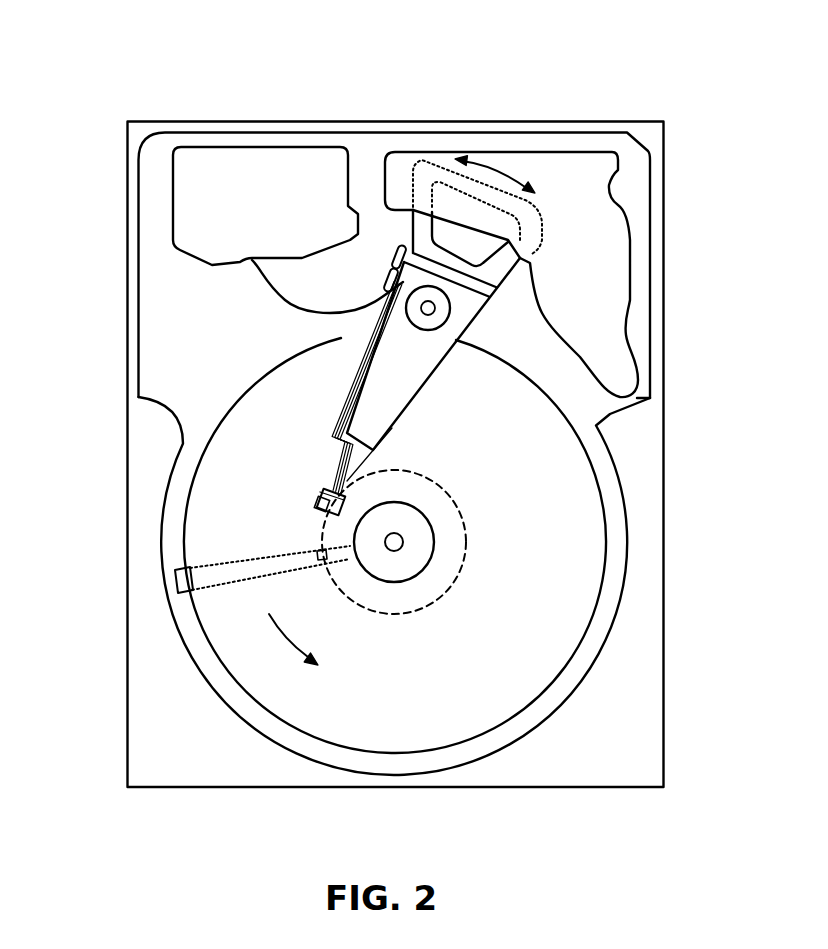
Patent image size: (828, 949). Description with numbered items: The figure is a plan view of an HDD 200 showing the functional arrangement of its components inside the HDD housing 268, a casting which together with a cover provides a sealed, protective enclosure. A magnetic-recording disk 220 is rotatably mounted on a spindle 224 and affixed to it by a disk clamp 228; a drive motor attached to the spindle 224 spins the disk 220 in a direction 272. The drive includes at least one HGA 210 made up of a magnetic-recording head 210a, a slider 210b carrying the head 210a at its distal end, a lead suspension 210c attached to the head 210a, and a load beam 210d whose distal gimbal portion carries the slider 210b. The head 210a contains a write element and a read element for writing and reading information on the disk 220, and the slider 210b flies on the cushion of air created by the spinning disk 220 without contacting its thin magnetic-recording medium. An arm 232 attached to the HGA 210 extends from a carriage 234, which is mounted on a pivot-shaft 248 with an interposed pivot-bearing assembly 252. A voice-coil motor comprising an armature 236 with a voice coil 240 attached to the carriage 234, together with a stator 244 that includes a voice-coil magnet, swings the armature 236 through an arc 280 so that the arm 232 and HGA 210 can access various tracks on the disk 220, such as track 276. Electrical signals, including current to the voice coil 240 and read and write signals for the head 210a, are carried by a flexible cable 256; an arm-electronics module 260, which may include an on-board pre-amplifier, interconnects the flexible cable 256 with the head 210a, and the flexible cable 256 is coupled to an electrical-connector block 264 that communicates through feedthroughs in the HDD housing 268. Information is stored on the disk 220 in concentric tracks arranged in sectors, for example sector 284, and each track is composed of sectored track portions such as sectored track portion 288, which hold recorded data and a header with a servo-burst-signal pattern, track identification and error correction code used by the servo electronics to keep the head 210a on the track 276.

The HDD 200 is at (97, 57).
The HGA 210 is at (202, 446).
The magnetic-recording head 210a is at (322, 497).
The slider 210b is at (332, 478).
The lead suspension 210c is at (340, 458).
The load beam 210d is at (348, 438).
The magnetic-recording disk 220 is at (547, 502).
The spindle 224 is at (403, 541).
The disk clamp 228 is at (417, 555).
The arm 232 is at (387, 403).
The carriage 234 is at (437, 318).
The armature 236 is at (405, 238).
The voice coil 240 is at (423, 222).
The stator 244 is at (604, 232).
The pivot-shaft 248 is at (437, 308).
The pivot-bearing assembly 252 is at (438, 322).
The flexible cable 256 is at (277, 288).
The arm-electronics module 260 is at (389, 281).
The electrical-connector block 264 is at (195, 207).
The HDD housing 268 is at (647, 131).
The direction 272 is at (303, 650).
The track 276 is at (459, 510).
The arc 280 is at (493, 164).
The sector 284 is at (176, 580).
The sectored track portion 288 is at (317, 554).